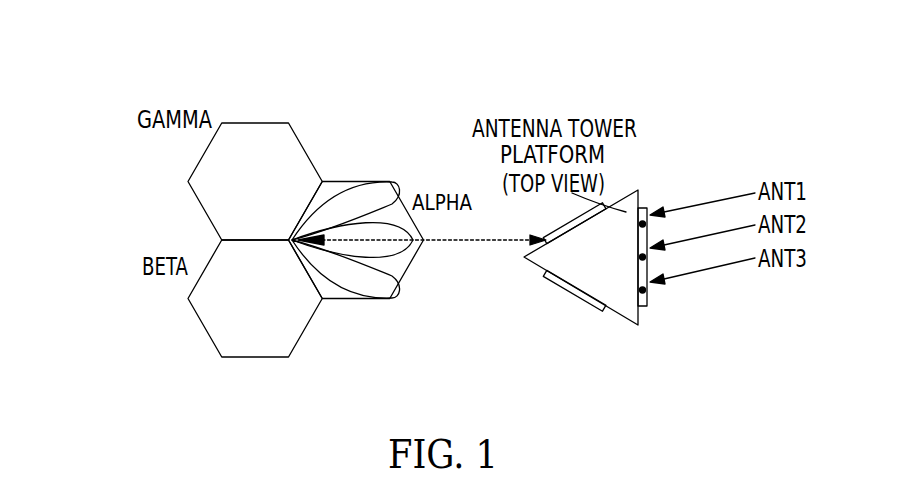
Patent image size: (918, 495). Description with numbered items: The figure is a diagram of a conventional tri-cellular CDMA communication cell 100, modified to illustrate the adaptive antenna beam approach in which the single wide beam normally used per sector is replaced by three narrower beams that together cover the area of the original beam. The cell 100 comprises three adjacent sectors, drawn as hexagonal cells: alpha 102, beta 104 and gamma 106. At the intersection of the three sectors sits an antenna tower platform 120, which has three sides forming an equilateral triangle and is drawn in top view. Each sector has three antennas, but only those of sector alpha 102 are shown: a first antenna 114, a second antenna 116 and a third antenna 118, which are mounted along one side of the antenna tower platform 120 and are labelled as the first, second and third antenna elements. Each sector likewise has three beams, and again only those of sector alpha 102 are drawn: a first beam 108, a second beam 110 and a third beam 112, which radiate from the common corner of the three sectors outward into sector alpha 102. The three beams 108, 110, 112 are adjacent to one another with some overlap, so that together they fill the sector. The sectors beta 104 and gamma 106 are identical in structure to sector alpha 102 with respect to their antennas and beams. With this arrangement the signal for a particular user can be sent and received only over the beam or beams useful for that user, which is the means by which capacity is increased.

The CDMA communication cell 100 is at (90, 56).
The sector alpha 102 is at (402, 277).
The sector beta 104 is at (193, 307).
The sector gamma 106 is at (194, 192).
The first beam 108 is at (350, 181).
The second beam 110 is at (412, 243).
The third beam 112 is at (350, 299).
The first antenna 114 is at (645, 224).
The second antenna 116 is at (645, 257).
The third antenna 118 is at (645, 290).
The antenna tower platform 120 is at (618, 269).